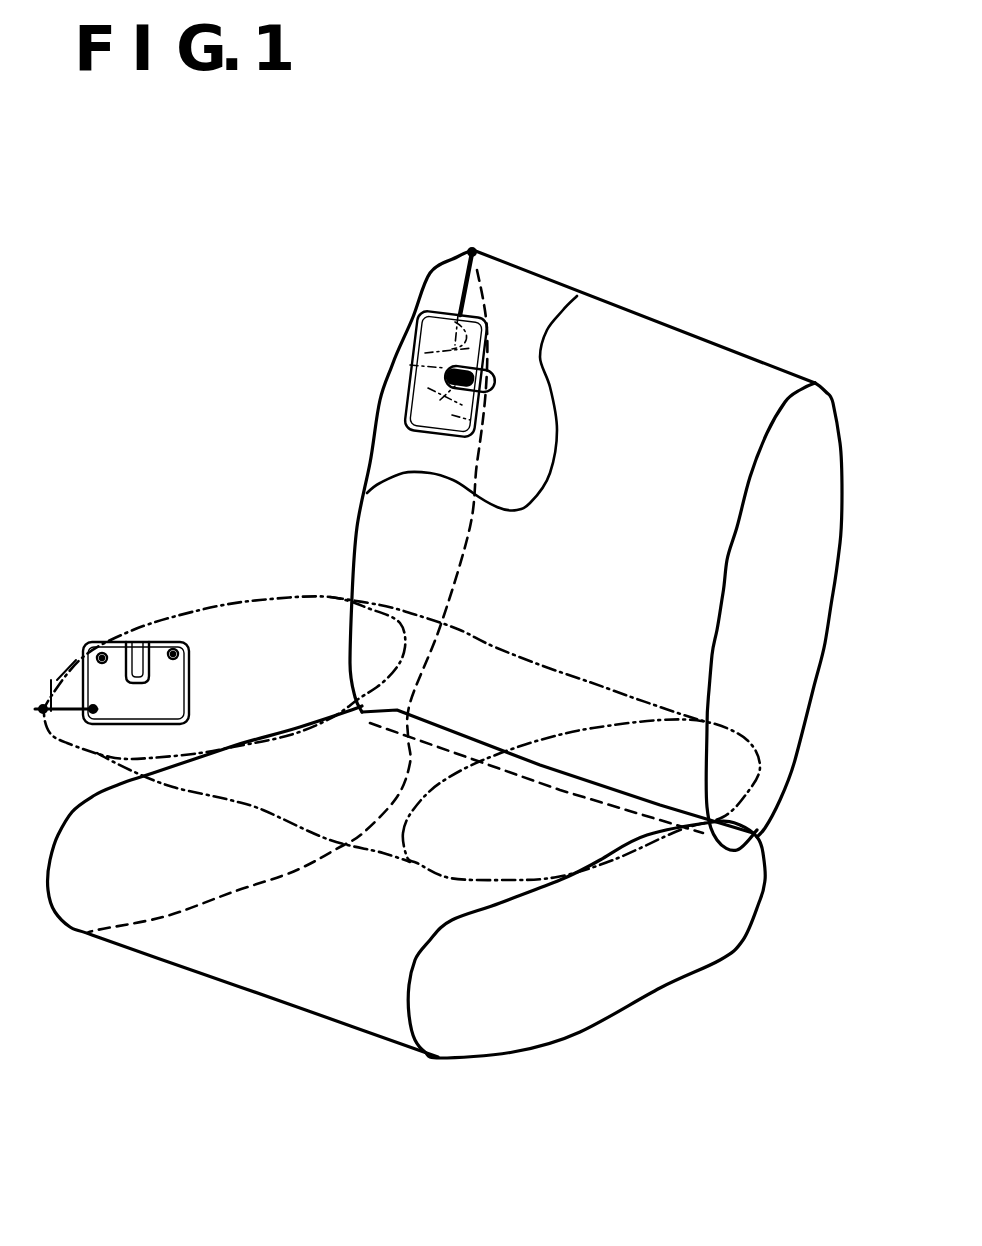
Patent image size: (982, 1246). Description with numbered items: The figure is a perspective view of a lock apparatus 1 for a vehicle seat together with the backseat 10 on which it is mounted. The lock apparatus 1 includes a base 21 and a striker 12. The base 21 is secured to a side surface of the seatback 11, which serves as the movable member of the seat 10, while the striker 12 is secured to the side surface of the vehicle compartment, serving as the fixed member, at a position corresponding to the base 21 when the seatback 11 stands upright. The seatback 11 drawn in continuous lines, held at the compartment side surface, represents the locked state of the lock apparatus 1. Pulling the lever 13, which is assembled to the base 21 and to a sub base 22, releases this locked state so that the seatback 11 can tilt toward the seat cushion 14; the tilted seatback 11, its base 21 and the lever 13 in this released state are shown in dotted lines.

The lock apparatus 1 is at (289, 454).
The backseat 10 is at (450, 567).
The seatback 11 is at (665, 324).
The striker 12 is at (496, 375).
The lever 13 is at (472, 252).
The seat cushion 14 is at (765, 880).
The base 21 is at (285, 517).
The sub base 22 is at (163, 640).